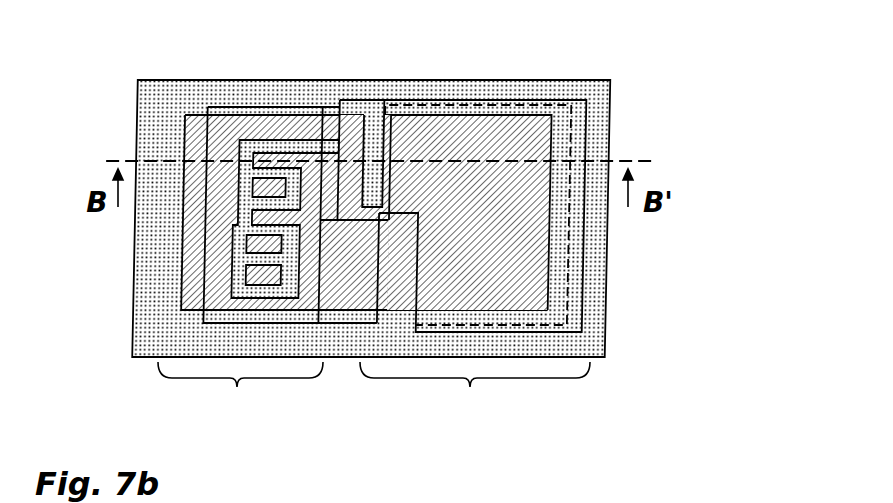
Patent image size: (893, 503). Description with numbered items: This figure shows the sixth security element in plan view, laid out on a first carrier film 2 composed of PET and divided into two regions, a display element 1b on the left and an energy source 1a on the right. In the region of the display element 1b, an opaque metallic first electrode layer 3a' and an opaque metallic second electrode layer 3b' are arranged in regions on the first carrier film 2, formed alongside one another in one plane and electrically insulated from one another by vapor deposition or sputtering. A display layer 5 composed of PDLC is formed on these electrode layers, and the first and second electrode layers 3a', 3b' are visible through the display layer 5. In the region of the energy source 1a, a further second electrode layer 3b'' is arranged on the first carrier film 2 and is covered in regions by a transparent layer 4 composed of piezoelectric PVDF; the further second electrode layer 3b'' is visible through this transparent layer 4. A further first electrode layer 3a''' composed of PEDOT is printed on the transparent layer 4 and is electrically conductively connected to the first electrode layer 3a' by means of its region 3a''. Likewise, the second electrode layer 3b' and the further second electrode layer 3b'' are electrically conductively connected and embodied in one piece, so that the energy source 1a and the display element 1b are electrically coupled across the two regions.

The first carrier film 2 is at (156, 94).
The display layer 5 is at (262, 103).
The first electrode layer 3a' is at (305, 216).
The second electrode layer 3b' is at (198, 219).
The region of the further first electrode layer 3a'' is at (355, 116).
The further first electrode layer 3a''' is at (476, 168).
The further second electrode layer 3b'' is at (538, 212).
The transparent layer 4 is at (540, 103).
The display element 1b is at (240, 391).
The energy source 1a is at (475, 391).